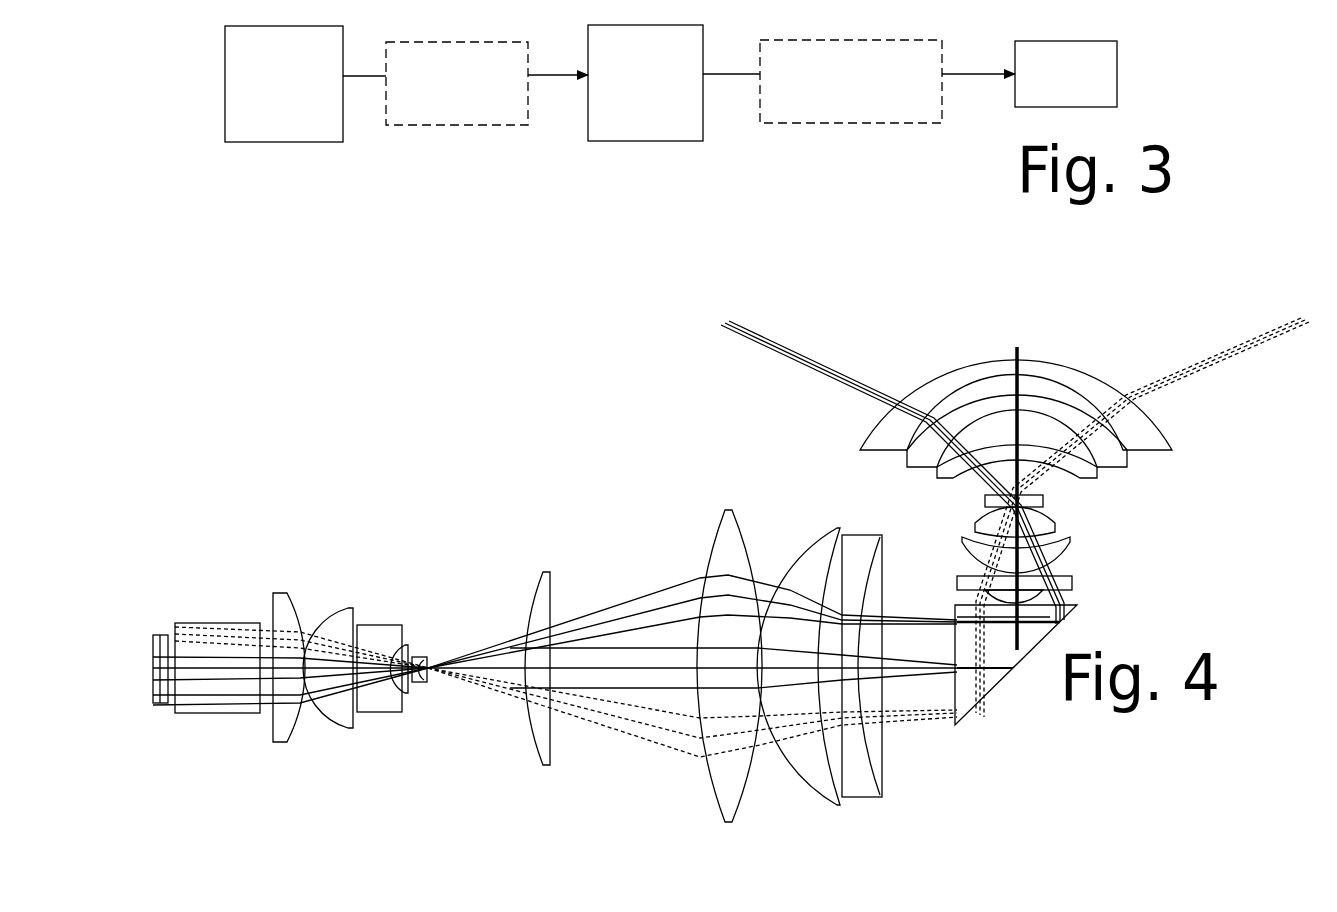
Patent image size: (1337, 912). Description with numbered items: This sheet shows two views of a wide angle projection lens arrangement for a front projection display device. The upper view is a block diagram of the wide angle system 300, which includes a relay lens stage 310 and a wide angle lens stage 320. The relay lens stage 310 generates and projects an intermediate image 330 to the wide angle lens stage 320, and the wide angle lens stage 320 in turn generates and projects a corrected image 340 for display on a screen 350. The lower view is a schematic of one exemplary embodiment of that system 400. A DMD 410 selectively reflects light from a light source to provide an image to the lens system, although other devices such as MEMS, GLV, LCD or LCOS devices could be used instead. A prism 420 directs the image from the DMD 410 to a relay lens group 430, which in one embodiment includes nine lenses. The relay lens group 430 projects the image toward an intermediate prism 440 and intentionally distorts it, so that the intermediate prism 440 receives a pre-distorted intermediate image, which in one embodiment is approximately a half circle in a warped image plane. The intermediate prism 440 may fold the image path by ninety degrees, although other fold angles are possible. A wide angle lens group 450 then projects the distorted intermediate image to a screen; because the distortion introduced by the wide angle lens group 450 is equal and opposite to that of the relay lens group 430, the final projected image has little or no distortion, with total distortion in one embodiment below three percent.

In FIG. 3, the wide angle system 300 is at (829, 172).
In FIG. 3, the relay lens stage 310 is at (259, 142).
In FIG. 3, the wide angle lens stage 320 is at (620, 141).
In FIG. 3, the intermediate image 330 is at (421, 125).
In FIG. 3, the corrected image 340 is at (850, 123).
In FIG. 3, the screen 350 is at (1117, 78).
In FIG. 4, the wide angle system 400 is at (258, 468).
In FIG. 4, the DMD 410 is at (153, 635).
In FIG. 4, the prism 420 is at (195, 625).
In FIG. 4, the relay lens group 430 is at (898, 523).
In FIG. 4, the intermediate prism 440 is at (995, 697).
In FIG. 4, the wide angle lens group 450 is at (1167, 358).